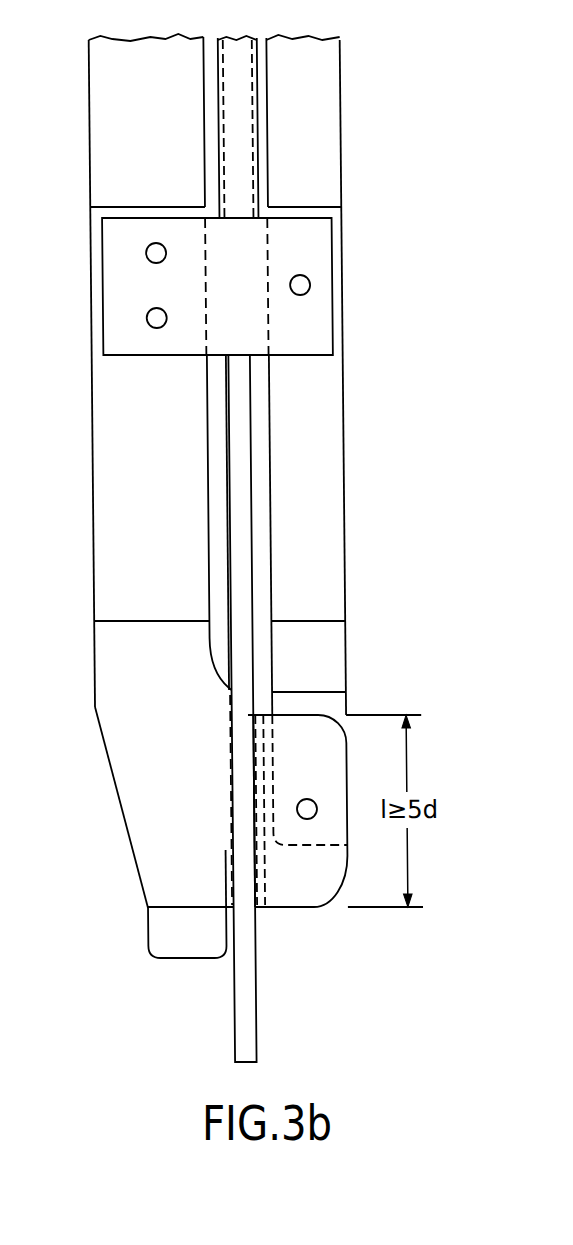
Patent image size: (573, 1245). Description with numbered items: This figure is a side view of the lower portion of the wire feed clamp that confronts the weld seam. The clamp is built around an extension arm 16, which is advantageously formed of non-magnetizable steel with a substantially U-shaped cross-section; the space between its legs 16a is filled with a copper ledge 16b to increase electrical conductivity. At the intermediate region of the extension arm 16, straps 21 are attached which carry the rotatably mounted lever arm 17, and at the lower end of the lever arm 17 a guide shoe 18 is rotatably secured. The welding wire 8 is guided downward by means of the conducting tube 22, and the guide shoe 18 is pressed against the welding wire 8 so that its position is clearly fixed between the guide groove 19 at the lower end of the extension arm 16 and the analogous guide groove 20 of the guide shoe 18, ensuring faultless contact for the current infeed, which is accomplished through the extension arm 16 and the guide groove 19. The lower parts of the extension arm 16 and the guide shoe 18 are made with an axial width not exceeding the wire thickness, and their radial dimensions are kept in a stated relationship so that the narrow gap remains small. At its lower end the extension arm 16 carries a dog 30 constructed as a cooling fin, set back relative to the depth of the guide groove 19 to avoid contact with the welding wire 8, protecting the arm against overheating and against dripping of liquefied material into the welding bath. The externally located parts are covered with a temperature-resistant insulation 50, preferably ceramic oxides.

The temperature-resistant insulation 50 is at (88, 496).
The legs 16a is at (114, 155).
The copper ledge 16b is at (142, 578).
The extension arm 16 is at (141, 748).
The lever arm 17 is at (311, 460).
The straps 21 is at (122, 285).
The conducting tube 22 is at (241, 99).
The welding wire 8 is at (238, 535).
The guide groove 19 is at (224, 808).
The guide groove 20 is at (249, 860).
The guide shoe 18 is at (309, 880).
The dog 30 is at (171, 938).